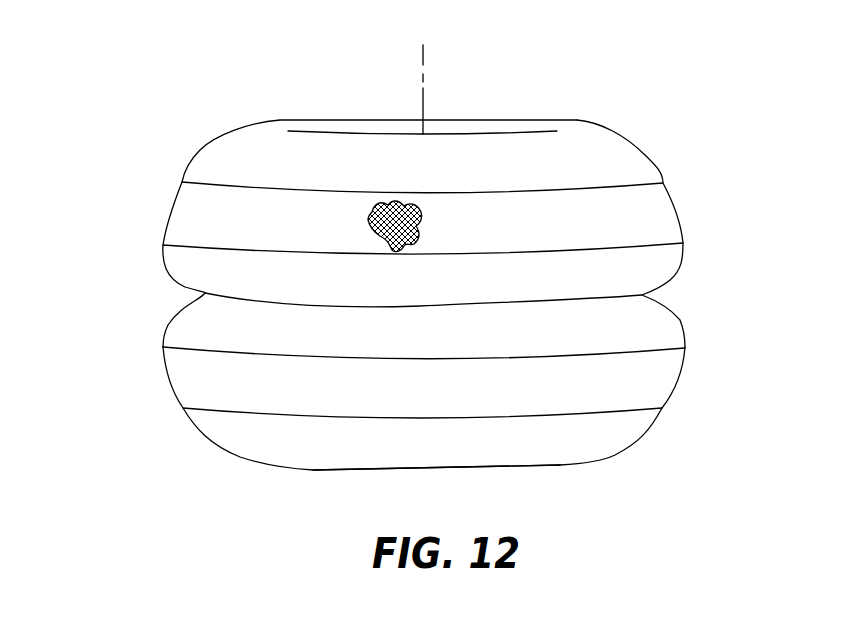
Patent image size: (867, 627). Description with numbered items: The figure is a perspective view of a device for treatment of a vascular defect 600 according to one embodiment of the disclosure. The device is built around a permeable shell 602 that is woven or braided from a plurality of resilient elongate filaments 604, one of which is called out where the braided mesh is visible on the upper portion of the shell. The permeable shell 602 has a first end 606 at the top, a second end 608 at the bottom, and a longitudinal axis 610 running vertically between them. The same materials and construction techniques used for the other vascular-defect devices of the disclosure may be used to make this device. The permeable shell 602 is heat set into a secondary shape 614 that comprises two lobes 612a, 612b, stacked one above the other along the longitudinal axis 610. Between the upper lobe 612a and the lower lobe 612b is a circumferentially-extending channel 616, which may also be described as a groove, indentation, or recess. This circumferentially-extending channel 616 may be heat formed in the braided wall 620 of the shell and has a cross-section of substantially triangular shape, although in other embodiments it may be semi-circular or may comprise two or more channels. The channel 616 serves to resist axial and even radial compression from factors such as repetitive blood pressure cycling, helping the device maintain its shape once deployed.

The device for treatment of a vascular defect 600 is at (138, 85).
The permeable shell 602 is at (678, 210).
The resilient elongate filaments 604 is at (423, 217).
The first end 606 is at (607, 135).
The second end 608 is at (578, 463).
The longitudinal axis 610 is at (426, 70).
The lobe 612a is at (660, 173).
The lobe 612b is at (677, 370).
The secondary shape 614 is at (95, 313).
The circumferentially-extending channel 616 is at (645, 294).
The braided wall 620 is at (497, 463).